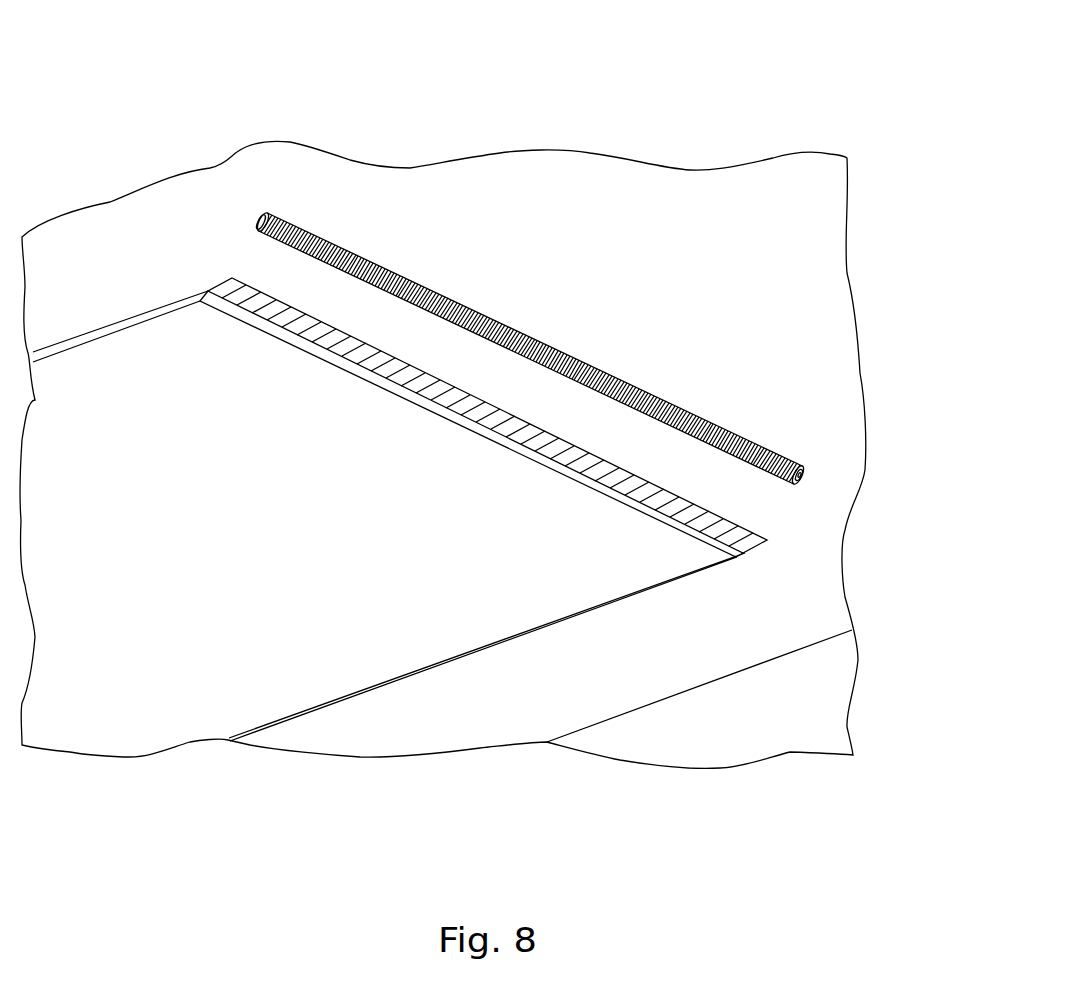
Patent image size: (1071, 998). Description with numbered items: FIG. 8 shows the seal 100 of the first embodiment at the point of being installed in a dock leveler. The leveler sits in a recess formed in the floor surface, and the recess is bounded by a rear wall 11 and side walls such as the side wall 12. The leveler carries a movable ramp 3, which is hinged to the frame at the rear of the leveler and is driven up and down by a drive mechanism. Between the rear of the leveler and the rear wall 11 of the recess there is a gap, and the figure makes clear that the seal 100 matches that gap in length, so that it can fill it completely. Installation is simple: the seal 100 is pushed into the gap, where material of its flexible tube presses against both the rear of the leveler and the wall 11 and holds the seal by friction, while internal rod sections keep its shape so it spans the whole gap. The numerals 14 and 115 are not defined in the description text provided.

The ramp 3 is at (140, 722).
The rear wall 11 is at (748, 553).
The side wall 12 is at (760, 433).
The channel 14 is at (207, 290).
The seal 100 is at (400, 268).
The assembly 115 is at (688, 123).